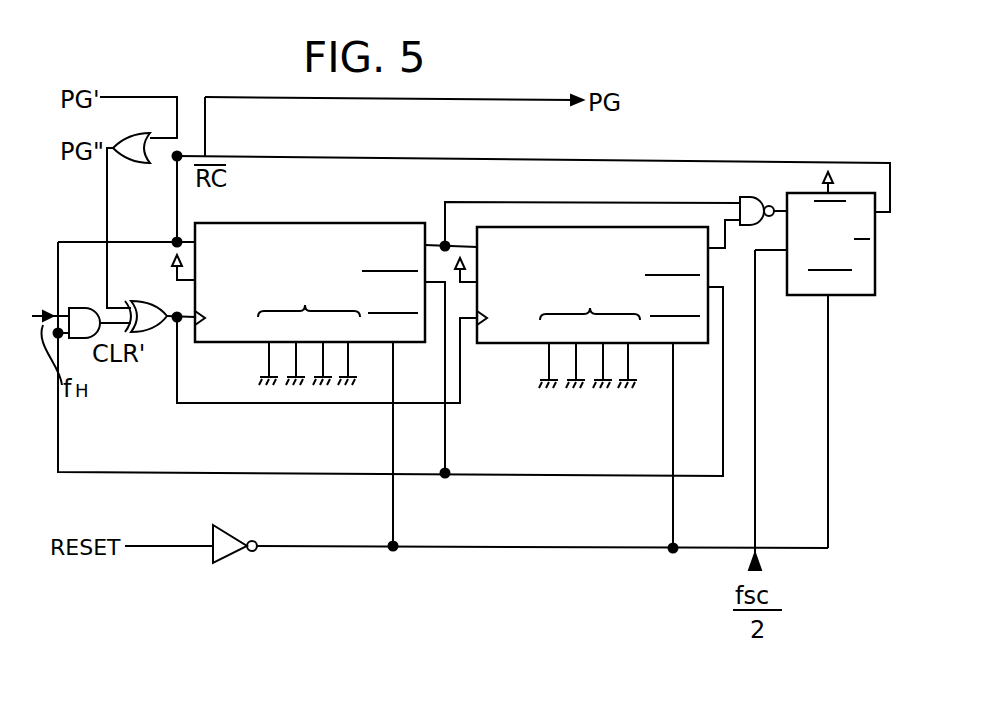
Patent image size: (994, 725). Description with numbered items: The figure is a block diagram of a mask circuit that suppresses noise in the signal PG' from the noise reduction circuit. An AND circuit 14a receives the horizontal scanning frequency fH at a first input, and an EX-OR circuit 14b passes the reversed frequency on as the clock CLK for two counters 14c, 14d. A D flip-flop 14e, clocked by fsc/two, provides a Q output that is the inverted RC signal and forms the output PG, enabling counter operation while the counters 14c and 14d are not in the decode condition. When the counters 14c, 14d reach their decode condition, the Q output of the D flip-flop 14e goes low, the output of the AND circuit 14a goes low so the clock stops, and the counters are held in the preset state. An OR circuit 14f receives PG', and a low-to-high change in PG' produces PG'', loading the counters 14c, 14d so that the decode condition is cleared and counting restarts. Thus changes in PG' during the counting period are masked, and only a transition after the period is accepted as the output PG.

The AND circuit 14a is at (80, 308).
The EX-OR circuit 14b is at (153, 332).
The counter 14c is at (305, 223).
The counter 14d is at (502, 345).
The D flip-flop 14e is at (855, 297).
The OR circuit 14f is at (127, 163).